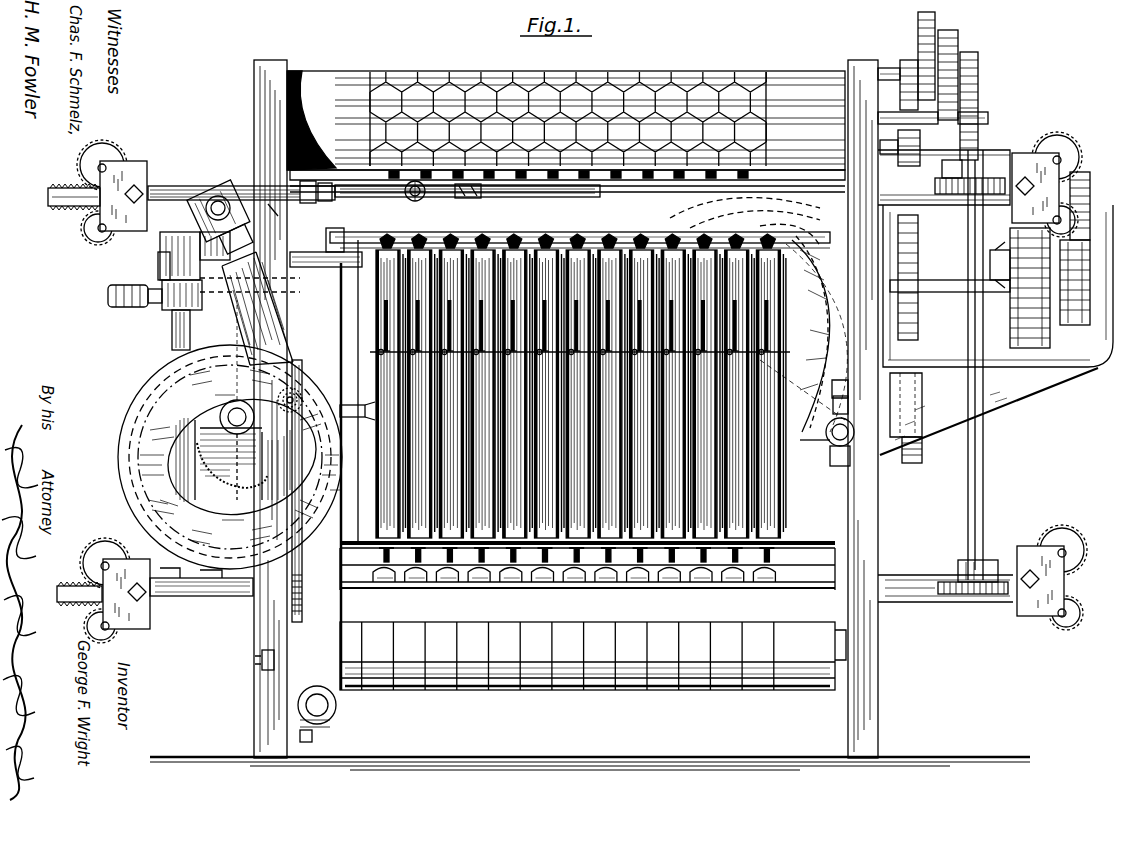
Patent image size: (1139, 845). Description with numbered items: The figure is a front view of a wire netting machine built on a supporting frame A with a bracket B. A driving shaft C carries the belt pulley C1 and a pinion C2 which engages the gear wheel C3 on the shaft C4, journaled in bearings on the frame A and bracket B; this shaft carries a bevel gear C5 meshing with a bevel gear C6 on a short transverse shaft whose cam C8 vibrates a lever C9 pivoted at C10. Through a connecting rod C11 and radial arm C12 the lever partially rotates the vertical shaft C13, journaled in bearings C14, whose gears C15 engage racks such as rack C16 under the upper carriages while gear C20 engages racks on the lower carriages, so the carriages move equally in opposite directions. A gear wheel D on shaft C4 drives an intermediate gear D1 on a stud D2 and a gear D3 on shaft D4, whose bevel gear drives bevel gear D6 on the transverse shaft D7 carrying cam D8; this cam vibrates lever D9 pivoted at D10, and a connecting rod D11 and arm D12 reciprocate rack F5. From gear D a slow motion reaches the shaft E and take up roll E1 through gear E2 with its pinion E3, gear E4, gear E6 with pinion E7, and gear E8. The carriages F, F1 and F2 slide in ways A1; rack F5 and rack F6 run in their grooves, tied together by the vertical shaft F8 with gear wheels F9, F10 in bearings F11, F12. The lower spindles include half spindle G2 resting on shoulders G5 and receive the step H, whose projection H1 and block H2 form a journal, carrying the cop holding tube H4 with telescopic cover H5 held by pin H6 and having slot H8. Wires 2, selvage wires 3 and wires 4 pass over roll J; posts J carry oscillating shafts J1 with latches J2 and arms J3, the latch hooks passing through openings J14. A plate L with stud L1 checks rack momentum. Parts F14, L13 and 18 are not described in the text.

The supporting frame A is at (290, 312).
The ways A1 is at (576, 596).
The bracket B is at (1015, 392).
The driving shaft C is at (918, 312).
The belt pulley C1 is at (1014, 265).
The pinion C2 is at (1078, 325).
The gear wheel C3 is at (1090, 200).
The shaft C4 is at (940, 248).
The bevel gear C5 is at (816, 334).
The bevel gear C6 is at (802, 367).
The cam C8 is at (815, 452).
The lever C9 is at (853, 378).
The pivot C10 is at (852, 442).
The connecting rod C11 is at (560, 247).
The radial arm C12 is at (108, 295).
The vertical shaft C13 is at (172, 330).
The bearings C14 is at (158, 262).
The gears C15 is at (160, 230).
The rack C16 is at (190, 222).
The gear C20 is at (160, 575).
The gear wheel D is at (905, 226).
The intermediate gear D1 is at (915, 335).
The stud D2 is at (960, 332).
The gear D3 is at (922, 452).
The shaft D4 is at (348, 410).
The bevel gear D6 is at (230, 470).
The transverse shaft D7 is at (237, 403).
The cam D8 is at (162, 466).
The lever D9 is at (295, 342).
The pivot D10 is at (336, 710).
The connecting rod D11 is at (283, 205).
The arm D12 is at (424, 199).
The shaft E is at (252, 130).
The take up roll E1 is at (589, 119).
The gear E2 is at (908, 108).
The pinion E3 is at (925, 152).
The gear E4 is at (918, 24).
The gear E6 is at (958, 40).
The pinion E7 is at (980, 58).
The gear E8 is at (982, 104).
The upper carriage F is at (664, 185).
The upper carriage F1 is at (152, 186).
The lower carriage F2 is at (925, 618).
The rack F5 is at (516, 198).
The rack F6 is at (68, 588).
The vertical shaft F8 is at (985, 480).
The gear wheel F9 is at (988, 178).
The gear wheel F10 is at (975, 596).
The bearing F11 is at (948, 172).
The bearing F12 is at (962, 566).
The rack F14 is at (50, 200).
The half spindle G2 is at (400, 568).
The shoulders G5 is at (430, 592).
The step H is at (585, 386).
The semi-circular projection H1 is at (712, 222).
The semi-circular block H2 is at (380, 346).
The cop holding tube H4 is at (818, 518).
The telescopic cover H5 is at (385, 298).
The pin H6 is at (532, 366).
The slot H8 is at (390, 330).
The roll / posts J is at (815, 550).
The oscillating shaft J1 is at (796, 588).
The latch J2 is at (535, 562).
The arm J3 is at (836, 586).
The openings J14 is at (768, 562).
The plate L is at (128, 166).
The stud L1 is at (104, 168).
The gear L13 is at (106, 150).
The wires 2 is at (712, 645).
The twisted selvage wires 3 is at (368, 97).
The wires 4 is at (513, 145).
The bar 18 is at (195, 590).